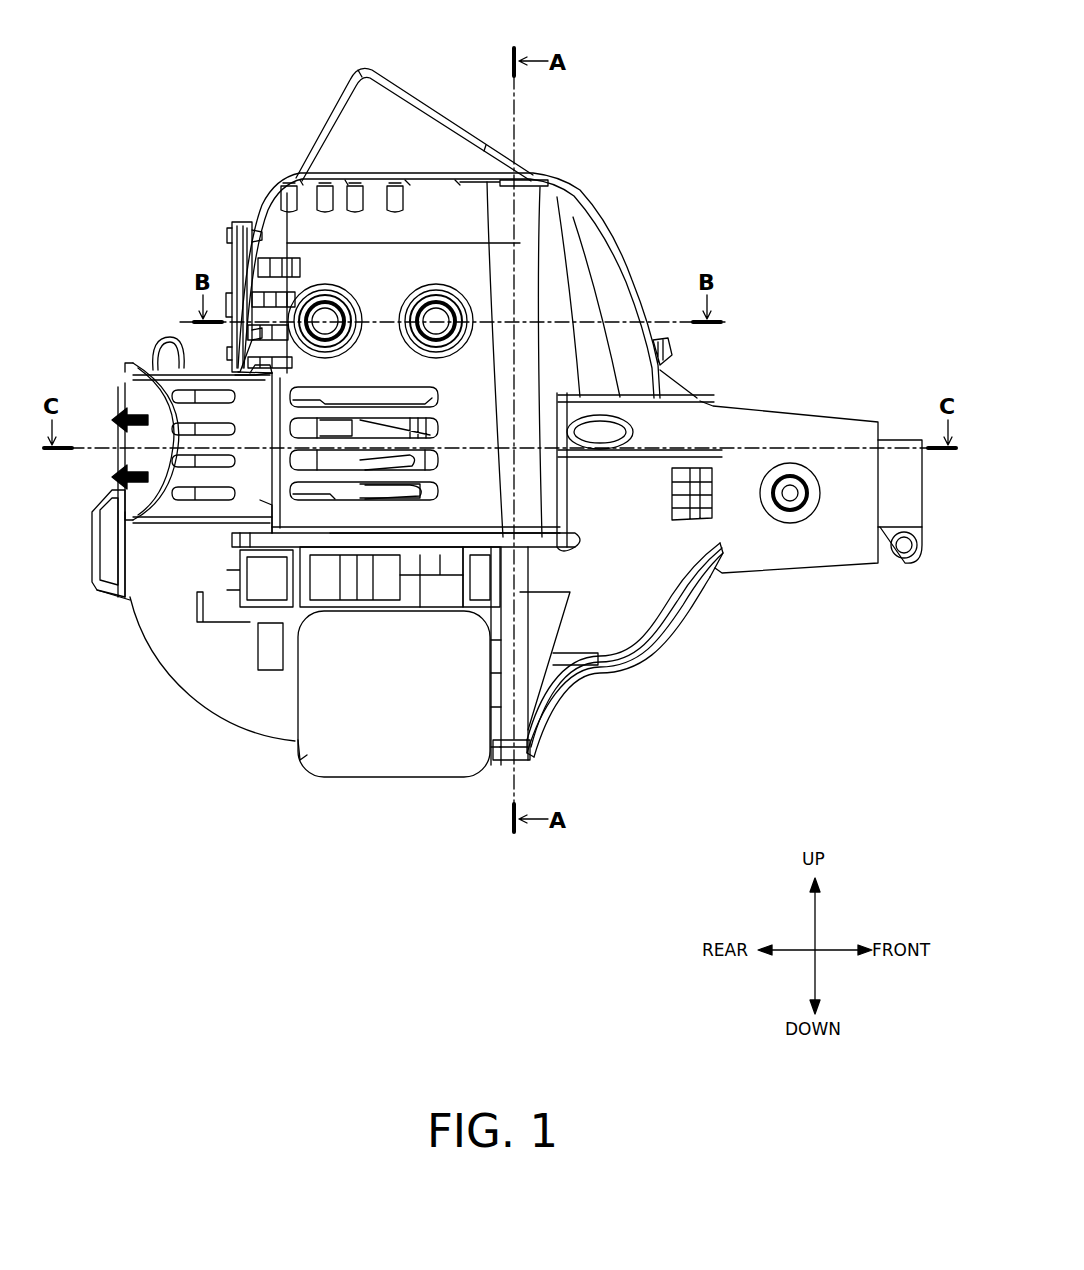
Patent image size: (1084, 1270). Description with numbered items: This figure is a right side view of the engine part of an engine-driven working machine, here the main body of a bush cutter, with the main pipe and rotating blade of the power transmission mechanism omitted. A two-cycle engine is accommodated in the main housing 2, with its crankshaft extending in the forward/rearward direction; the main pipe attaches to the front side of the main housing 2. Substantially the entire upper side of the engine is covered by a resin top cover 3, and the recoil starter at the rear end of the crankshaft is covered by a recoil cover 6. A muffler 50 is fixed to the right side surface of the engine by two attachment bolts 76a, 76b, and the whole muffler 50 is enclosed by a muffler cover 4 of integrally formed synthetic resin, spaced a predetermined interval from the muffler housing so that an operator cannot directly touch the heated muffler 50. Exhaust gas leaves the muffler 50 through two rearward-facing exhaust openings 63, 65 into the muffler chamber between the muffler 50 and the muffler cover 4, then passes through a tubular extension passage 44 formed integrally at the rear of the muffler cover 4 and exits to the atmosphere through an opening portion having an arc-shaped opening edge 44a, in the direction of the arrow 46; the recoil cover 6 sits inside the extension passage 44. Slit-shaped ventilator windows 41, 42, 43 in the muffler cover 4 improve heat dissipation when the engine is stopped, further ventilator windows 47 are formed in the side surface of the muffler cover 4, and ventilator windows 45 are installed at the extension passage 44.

The main housing 2 is at (793, 430).
The top cover 3 is at (383, 113).
The muffler cover 4 is at (533, 497).
The recoil cover 6 is at (127, 594).
The ventilator window 41 is at (270, 193).
The ventilator window 42 is at (257, 268).
The ventilator window 43 is at (253, 222).
The extension passage 44 is at (173, 380).
The arc-shaped opening edge 44a is at (139, 393).
The ventilator window 45 is at (208, 380).
The arrow 46 is at (116, 448).
The ventilator window 47 is at (355, 427).
The muffler 50 is at (303, 461).
The exhaust opening 63 is at (327, 500).
The exhaust opening 65 is at (347, 488).
The attachment bolt 76a is at (436, 315).
The attachment bolt 76b is at (323, 315).